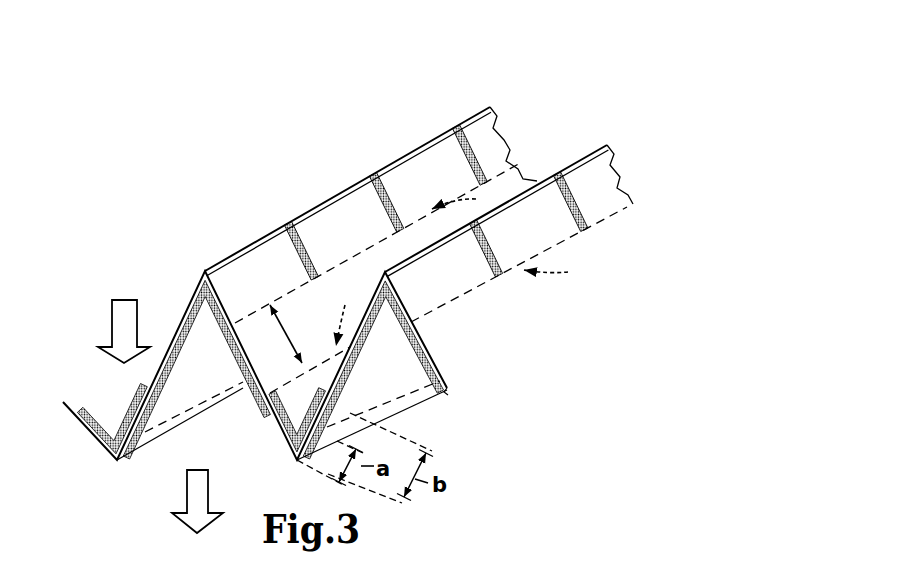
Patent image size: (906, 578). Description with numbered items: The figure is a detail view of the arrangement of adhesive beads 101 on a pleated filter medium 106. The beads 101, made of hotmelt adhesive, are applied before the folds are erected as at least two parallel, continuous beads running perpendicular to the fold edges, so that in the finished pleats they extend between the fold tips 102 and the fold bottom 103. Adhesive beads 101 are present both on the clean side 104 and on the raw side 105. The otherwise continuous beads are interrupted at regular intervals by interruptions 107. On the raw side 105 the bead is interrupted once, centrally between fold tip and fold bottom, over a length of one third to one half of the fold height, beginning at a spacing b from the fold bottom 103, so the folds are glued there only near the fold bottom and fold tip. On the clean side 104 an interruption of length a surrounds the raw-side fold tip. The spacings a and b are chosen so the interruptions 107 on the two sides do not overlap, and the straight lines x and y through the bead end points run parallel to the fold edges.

The adhesive beads 101 is at (293, 247).
The fold tips 102 is at (422, 147).
The fold bottom 103 is at (114, 411).
The clean side 104 is at (154, 469).
The raw side 105 is at (264, 205).
The filter medium 106 is at (333, 226).
The interruptions 107 is at (287, 334).